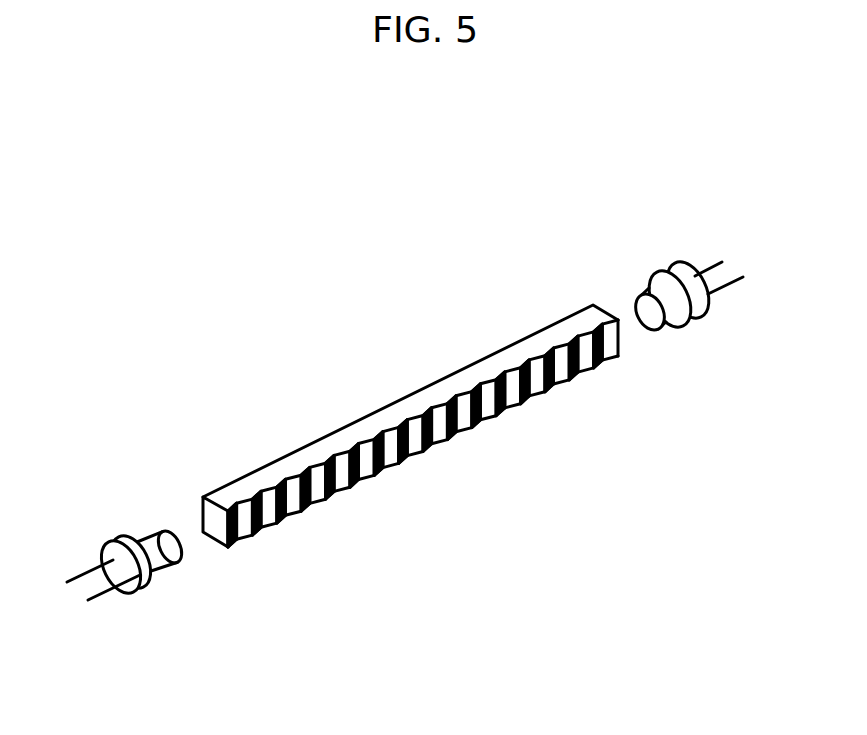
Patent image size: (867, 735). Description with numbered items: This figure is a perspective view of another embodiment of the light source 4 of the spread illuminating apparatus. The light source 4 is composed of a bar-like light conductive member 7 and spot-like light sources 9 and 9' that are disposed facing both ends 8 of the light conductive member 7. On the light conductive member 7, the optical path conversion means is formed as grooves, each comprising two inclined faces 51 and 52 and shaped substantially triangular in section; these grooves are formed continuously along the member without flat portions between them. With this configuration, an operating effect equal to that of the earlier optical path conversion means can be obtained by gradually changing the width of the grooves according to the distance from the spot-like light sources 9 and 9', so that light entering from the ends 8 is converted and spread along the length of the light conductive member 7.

The light source 4 is at (247, 402).
The light conductive member 7 is at (238, 498).
The end 8 is at (218, 535).
The spot-like light source 9 is at (126, 493).
The spot-like light source 9' is at (686, 244).
The inclined face 51 is at (472, 408).
The inclined face 52 is at (512, 402).